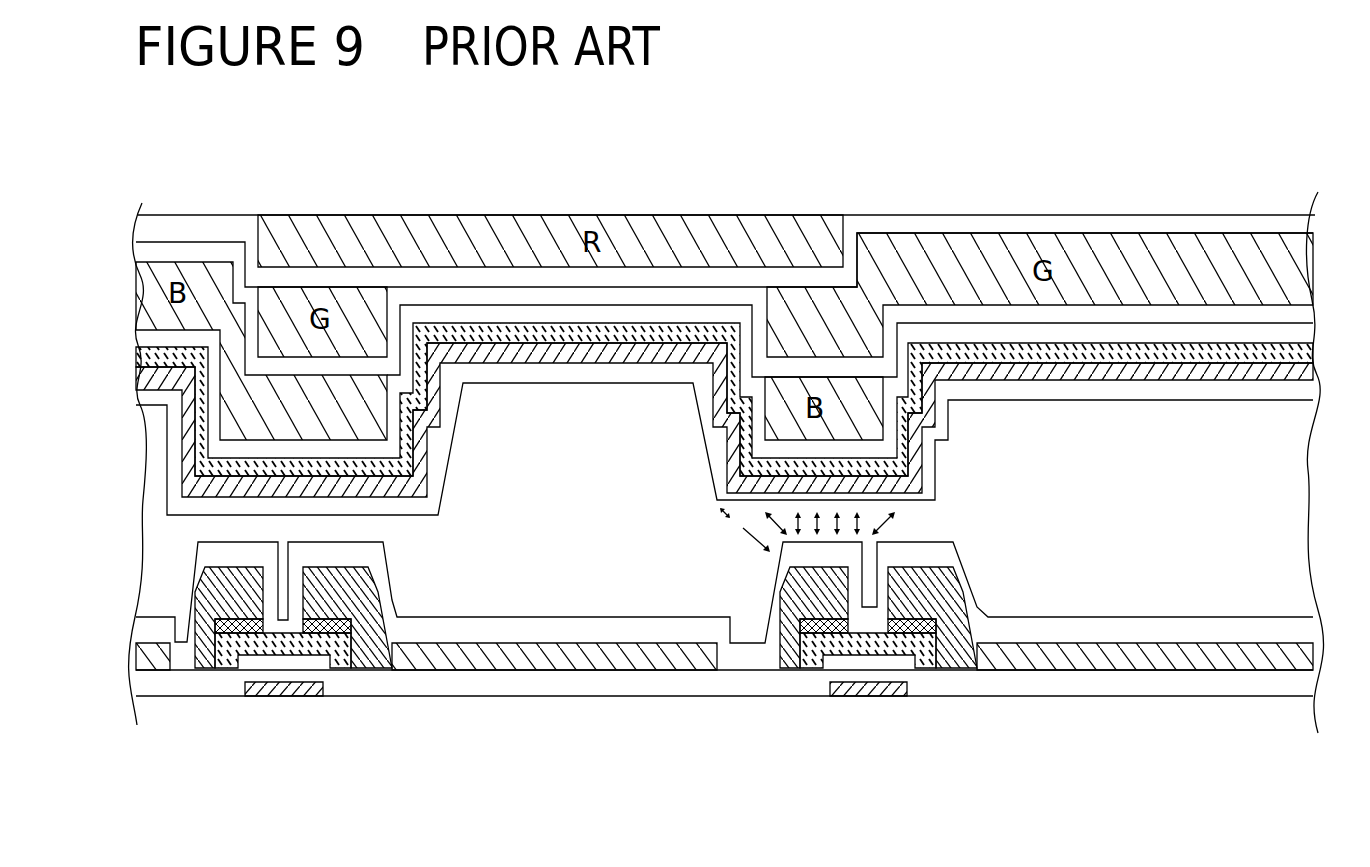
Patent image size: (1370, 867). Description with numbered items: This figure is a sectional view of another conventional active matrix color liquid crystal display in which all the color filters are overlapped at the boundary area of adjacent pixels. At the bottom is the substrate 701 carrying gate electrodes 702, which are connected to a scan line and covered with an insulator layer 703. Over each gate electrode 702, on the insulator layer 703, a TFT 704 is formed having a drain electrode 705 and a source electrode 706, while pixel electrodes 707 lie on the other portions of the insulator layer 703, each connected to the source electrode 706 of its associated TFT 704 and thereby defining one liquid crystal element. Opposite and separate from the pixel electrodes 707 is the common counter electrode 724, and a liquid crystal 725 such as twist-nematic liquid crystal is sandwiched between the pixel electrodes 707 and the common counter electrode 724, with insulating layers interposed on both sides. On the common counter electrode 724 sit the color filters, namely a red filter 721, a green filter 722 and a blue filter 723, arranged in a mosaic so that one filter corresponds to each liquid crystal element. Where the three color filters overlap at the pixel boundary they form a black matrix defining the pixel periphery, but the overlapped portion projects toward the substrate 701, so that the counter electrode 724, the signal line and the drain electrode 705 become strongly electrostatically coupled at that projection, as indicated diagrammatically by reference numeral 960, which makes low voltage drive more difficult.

The substrate 701 is at (491, 783).
The gate electrode 702 is at (284, 693).
The insulator layer 703 is at (363, 674).
The TFT 704 is at (202, 701).
The drain electrode 705 is at (230, 570).
The source electrode 706 is at (363, 583).
The pixel electrode 707 is at (458, 664).
The red filter 721 is at (487, 228).
The green filter 722 is at (305, 297).
The blue filter 723 is at (194, 266).
The common counter electrode 724 is at (536, 357).
The liquid crystal 725 is at (1168, 478).
The electrostatic coupling 960 is at (890, 513).